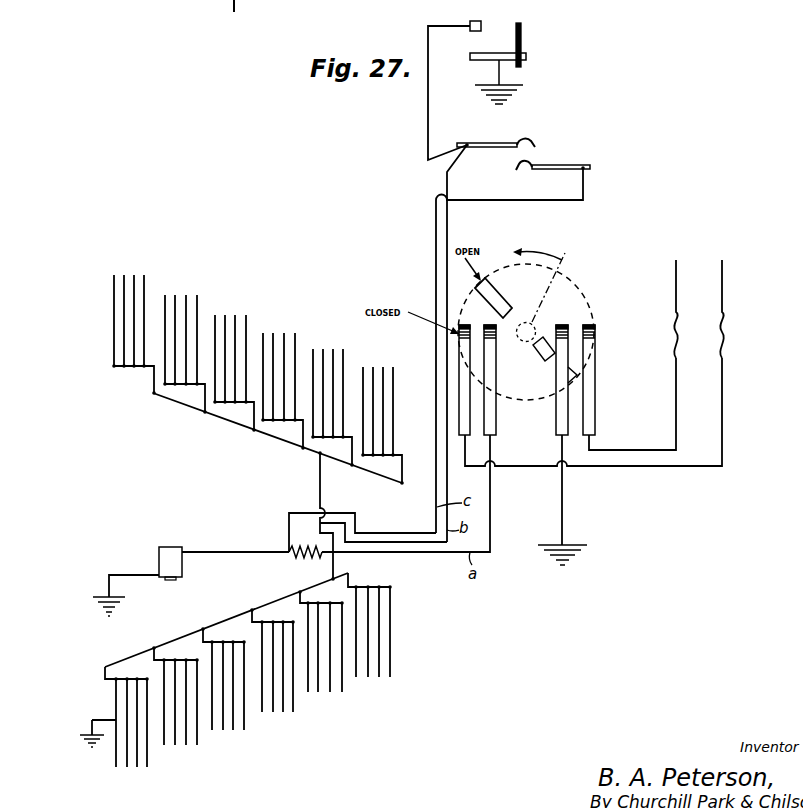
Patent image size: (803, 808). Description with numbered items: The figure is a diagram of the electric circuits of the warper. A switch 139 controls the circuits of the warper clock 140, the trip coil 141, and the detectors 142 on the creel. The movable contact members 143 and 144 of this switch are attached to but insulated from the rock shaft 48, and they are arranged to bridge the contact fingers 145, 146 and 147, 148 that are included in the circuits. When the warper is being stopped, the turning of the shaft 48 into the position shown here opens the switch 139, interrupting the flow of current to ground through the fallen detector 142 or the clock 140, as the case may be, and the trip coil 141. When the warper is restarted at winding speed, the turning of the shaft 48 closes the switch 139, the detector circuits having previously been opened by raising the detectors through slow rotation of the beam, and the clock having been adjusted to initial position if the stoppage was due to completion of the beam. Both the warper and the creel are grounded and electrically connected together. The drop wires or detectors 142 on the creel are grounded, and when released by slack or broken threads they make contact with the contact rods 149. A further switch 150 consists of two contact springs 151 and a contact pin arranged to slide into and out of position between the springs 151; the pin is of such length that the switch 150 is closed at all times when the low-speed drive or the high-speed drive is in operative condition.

The rock shaft 48 is at (573, 252).
The switch 139 is at (531, 326).
The warper clock 140 is at (534, 90).
The trip coil 141 is at (207, 570).
The detectors 142 is at (115, 720).
The movable contact member 143 is at (498, 302).
The movable contact member 144 is at (540, 362).
The contact finger 145 is at (463, 370).
The contact finger 146 is at (492, 352).
The contact finger 147 is at (563, 325).
The contact finger 148 is at (590, 348).
The contact rods 149 is at (312, 336).
The switch 150 is at (500, 164).
The contact springs 151 is at (520, 168).